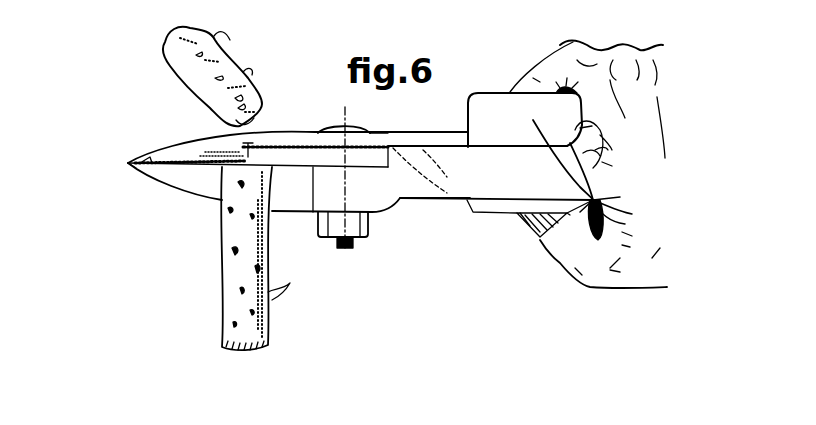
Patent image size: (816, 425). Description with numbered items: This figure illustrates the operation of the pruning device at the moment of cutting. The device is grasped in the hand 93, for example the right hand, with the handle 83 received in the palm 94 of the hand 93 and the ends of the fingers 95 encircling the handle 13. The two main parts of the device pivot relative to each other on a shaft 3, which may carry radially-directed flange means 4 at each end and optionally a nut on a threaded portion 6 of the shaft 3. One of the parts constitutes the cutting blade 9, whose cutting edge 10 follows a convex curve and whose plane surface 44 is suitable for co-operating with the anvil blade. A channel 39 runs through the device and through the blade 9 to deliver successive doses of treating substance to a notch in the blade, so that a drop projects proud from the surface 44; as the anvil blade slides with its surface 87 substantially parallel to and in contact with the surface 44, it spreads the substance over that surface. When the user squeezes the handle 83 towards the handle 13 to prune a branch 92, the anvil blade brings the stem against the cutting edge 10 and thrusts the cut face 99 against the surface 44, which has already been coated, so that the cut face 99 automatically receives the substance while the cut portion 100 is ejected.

The shaft 3 is at (347, 250).
The flange means 4 is at (337, 123).
The threaded portion 6 is at (362, 213).
The cutting blade 9 is at (152, 153).
The cutting edge 10 is at (135, 166).
The handle 13 is at (467, 114).
The channel 39 is at (377, 135).
The surface 44 is at (288, 165).
The handle 83 is at (470, 182).
The surface 87 is at (195, 155).
The branch 92 is at (217, 283).
The hand 93 is at (622, 60).
The palm 94 is at (538, 140).
The fingers 95 is at (512, 92).
The cut face 99 is at (215, 134).
The cut portion 100 is at (165, 56).